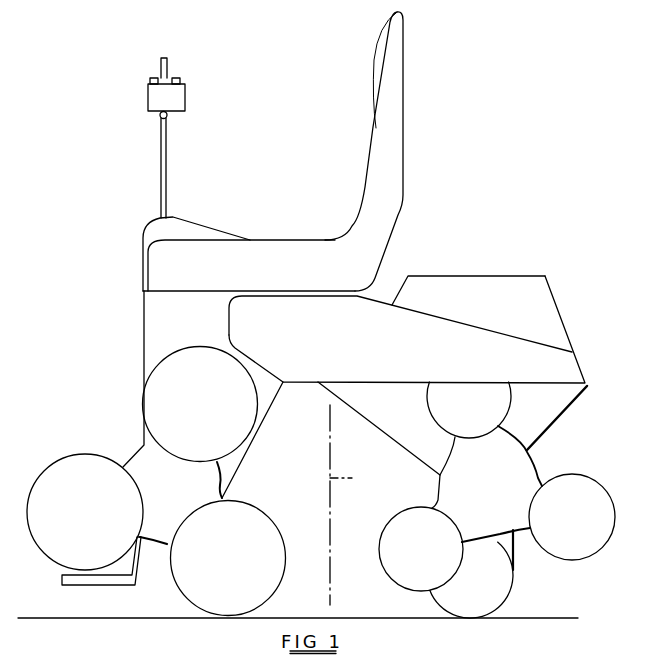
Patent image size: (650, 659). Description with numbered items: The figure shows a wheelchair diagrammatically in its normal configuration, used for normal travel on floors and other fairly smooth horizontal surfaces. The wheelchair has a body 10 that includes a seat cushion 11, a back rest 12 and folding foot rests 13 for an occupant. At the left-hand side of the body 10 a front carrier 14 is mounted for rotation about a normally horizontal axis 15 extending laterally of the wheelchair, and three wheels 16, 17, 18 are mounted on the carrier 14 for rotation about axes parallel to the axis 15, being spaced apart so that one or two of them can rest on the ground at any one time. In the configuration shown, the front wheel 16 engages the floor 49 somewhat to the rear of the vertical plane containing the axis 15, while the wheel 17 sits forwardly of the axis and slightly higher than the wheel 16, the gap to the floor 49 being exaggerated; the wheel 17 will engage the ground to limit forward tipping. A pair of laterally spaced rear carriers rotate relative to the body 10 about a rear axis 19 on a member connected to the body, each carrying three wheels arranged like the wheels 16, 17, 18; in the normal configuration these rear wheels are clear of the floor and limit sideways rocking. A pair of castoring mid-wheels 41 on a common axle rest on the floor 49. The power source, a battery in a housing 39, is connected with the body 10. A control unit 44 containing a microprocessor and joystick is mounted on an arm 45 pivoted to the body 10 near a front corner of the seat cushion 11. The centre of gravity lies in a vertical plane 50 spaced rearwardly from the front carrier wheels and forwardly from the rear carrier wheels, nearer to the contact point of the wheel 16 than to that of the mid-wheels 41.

The body 10 is at (143, 328).
The seat cushion 11 is at (195, 233).
The back rest 12 is at (372, 92).
The folding foot rests 13 is at (95, 584).
The front, left-hand carrier 14 is at (163, 549).
The horizontal axis 15 is at (168, 492).
The front wheel 16 is at (273, 538).
The wheel 17 is at (97, 458).
The wheel 18 is at (163, 373).
The rear axis 19 is at (483, 488).
The housing 39 is at (513, 275).
The mid-wheels 41 is at (505, 573).
The control unit 44 is at (147, 97).
The arm 45 is at (157, 120).
The floor 49 is at (366, 617).
The vertical plane 50 is at (352, 478).